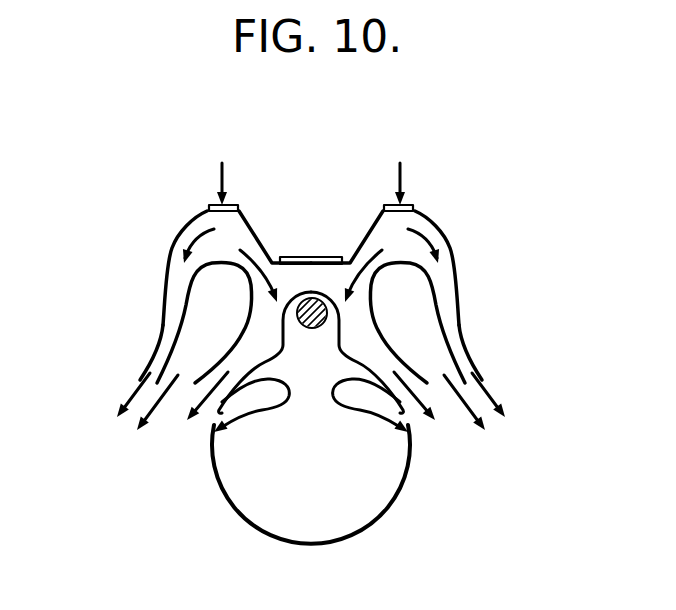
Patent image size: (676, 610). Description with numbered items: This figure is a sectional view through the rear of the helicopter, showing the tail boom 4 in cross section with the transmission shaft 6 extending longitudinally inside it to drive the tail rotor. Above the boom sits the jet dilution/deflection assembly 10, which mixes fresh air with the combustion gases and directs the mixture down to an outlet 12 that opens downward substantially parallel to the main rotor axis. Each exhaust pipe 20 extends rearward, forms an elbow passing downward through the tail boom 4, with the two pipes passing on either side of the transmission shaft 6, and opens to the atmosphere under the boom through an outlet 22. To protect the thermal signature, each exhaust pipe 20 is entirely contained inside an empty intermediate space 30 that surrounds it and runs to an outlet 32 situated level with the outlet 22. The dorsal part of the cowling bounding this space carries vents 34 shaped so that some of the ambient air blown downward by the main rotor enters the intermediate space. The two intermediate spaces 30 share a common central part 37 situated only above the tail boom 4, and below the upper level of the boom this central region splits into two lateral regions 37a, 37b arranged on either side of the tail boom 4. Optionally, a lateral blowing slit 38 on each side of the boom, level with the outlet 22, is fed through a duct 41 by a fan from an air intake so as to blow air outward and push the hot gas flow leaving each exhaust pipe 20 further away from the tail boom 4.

The tail boom 4 is at (290, 487).
The transmission shaft 6 is at (309, 303).
The jet dilution/deflection assembly 10 is at (176, 206).
The outlet 12 is at (114, 431).
The exhaust pipe 20 is at (208, 283).
The outlet 22 is at (140, 425).
The intermediate space 30 is at (178, 283).
The outlet 32 is at (137, 383).
The vents 34 is at (307, 257).
The common central part 37 is at (325, 283).
The lateral region 37a is at (237, 327).
The lateral region 37b is at (360, 330).
The lateral blowing slit 38 is at (217, 424).
The duct 41 is at (343, 393).